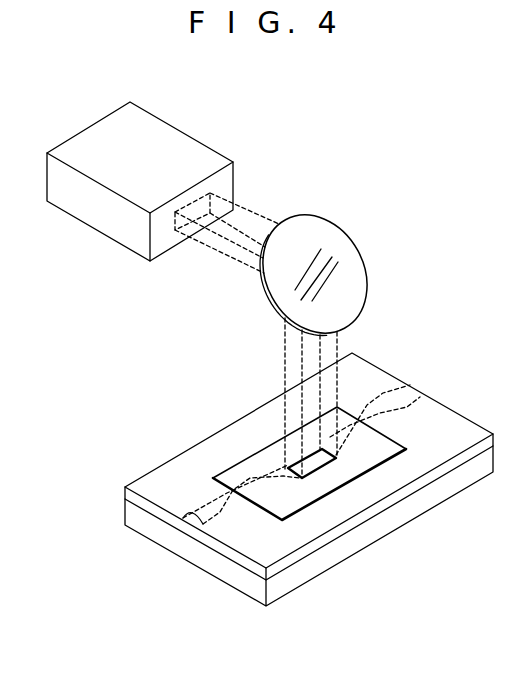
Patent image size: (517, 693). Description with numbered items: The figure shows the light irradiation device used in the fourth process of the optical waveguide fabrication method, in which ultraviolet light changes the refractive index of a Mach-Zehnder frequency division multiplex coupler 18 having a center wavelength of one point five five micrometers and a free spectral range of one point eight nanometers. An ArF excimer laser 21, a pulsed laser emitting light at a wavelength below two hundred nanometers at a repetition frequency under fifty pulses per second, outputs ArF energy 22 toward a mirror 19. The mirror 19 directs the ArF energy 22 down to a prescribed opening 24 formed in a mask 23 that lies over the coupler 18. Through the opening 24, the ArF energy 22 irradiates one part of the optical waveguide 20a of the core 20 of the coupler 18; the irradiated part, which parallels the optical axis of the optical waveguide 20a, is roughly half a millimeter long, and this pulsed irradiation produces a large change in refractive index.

The Mach-Zehnder frequency division multiplex coupler 18 is at (145, 520).
The mirror 19 is at (352, 248).
The core 20 is at (385, 383).
The optical waveguide 20a is at (187, 517).
The ArF excimer laser 21 is at (88, 142).
The ArF energy 22 is at (286, 372).
The mask 23 is at (242, 468).
The prescribed opening 24 is at (328, 461).